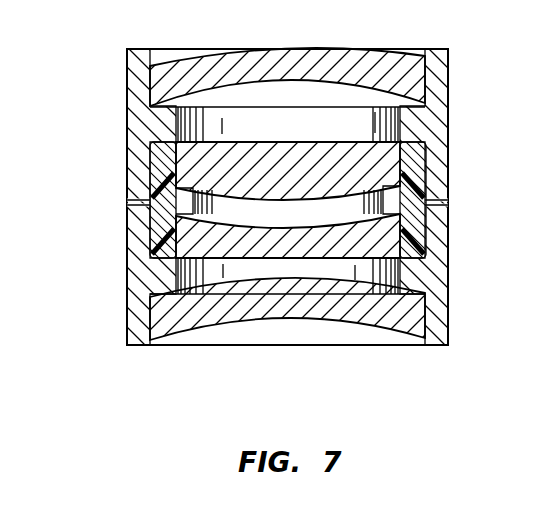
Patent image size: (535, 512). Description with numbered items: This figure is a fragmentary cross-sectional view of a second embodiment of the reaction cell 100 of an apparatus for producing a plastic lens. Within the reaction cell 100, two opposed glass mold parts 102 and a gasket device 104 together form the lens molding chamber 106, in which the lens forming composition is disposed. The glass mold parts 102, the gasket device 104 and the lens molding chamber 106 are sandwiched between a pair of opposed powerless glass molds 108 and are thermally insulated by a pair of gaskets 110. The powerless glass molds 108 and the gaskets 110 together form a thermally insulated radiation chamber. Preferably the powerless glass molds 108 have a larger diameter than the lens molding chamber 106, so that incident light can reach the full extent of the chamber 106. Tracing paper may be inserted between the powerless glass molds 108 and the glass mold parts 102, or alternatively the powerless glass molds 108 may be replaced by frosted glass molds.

The reaction cell 100 is at (112, 111).
The glass mold parts 102 is at (290, 140).
The gasket device 104 is at (160, 156).
The lens molding chamber 106 is at (127, 208).
The powerless glass molds 108 is at (209, 56).
The gaskets 110 is at (127, 72).